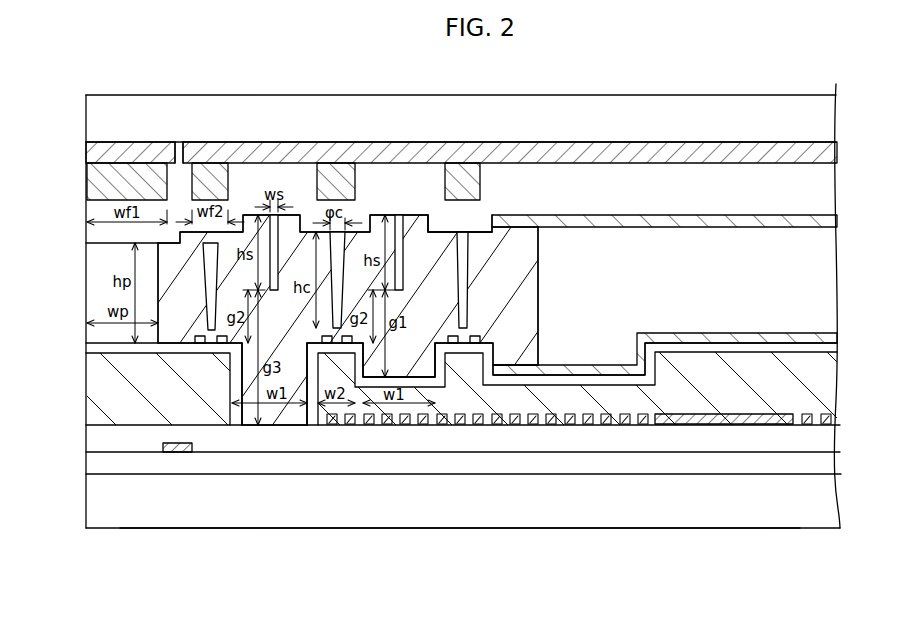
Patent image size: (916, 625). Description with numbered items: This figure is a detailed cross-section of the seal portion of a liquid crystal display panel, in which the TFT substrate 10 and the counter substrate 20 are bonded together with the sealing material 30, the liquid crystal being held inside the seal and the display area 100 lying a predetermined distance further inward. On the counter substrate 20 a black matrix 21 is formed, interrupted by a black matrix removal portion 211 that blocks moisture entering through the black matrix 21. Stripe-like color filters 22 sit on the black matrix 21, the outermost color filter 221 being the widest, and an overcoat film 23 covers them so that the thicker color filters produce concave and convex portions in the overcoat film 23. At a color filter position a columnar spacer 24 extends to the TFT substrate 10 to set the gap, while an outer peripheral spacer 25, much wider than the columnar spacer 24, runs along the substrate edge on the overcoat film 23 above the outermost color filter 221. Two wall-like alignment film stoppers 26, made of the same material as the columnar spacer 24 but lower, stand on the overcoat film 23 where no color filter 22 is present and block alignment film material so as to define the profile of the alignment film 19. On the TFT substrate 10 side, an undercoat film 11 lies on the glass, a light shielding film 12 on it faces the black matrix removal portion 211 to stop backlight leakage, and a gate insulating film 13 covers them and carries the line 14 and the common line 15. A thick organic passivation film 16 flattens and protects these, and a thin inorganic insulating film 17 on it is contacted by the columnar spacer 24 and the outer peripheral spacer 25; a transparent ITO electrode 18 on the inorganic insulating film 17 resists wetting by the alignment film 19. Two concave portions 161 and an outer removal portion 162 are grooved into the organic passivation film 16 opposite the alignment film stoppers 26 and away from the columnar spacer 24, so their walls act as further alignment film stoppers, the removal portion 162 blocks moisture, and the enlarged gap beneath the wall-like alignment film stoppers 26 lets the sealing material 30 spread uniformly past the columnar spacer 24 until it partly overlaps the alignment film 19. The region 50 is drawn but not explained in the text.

The display area 100 is at (792, 88).
The TFT substrate 10 is at (828, 507).
The undercoat film 11 is at (838, 467).
The light shielding film 12 is at (180, 453).
The gate insulating film 13 is at (838, 441).
The line 14 is at (625, 427).
The common line 15 is at (712, 427).
The organic passivation film 16 is at (103, 396).
The concave portion 161 is at (411, 372).
The removal portion 162 is at (285, 410).
The inorganic insulating film 17 is at (96, 350).
The transparent electrode 18 is at (482, 328).
The alignment film 19 is at (797, 224).
The counter substrate 20 is at (838, 118).
The black matrix 21 is at (838, 156).
The black matrix removal portion 211 is at (180, 150).
The color filters 22 is at (461, 175).
The outermost color filter 221 is at (100, 183).
The overcoat film 23 is at (822, 196).
The columnar spacer 24 is at (482, 256).
The outer peripheral spacer 25 is at (100, 266).
The alignment film stopper 26 is at (403, 278).
The sealing material 30 is at (512, 282).
The cavity 50 is at (813, 275).